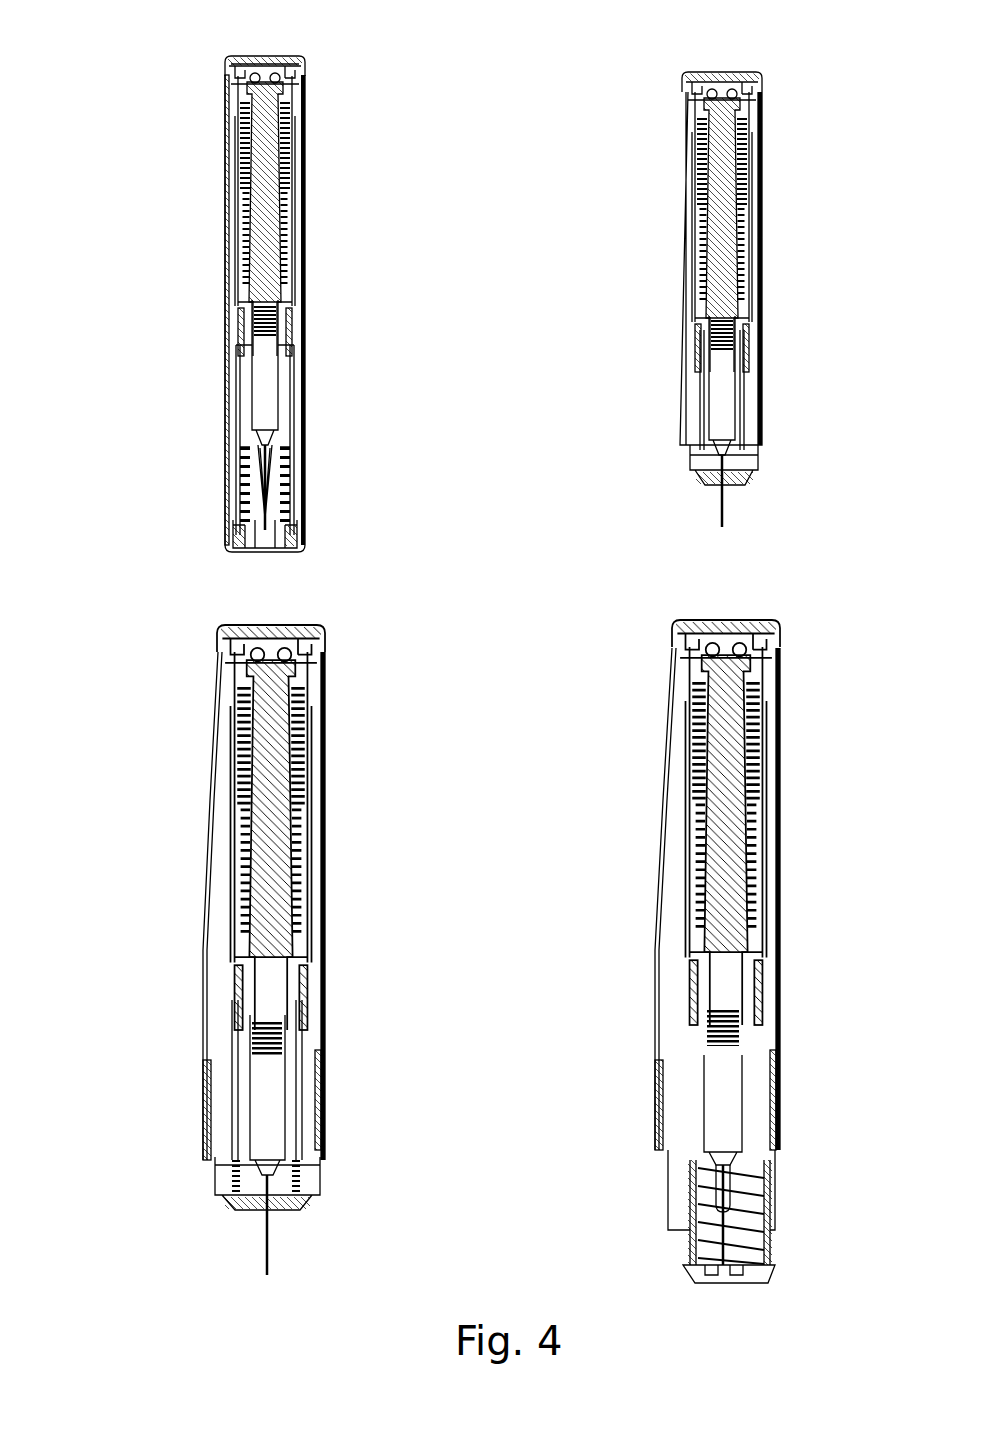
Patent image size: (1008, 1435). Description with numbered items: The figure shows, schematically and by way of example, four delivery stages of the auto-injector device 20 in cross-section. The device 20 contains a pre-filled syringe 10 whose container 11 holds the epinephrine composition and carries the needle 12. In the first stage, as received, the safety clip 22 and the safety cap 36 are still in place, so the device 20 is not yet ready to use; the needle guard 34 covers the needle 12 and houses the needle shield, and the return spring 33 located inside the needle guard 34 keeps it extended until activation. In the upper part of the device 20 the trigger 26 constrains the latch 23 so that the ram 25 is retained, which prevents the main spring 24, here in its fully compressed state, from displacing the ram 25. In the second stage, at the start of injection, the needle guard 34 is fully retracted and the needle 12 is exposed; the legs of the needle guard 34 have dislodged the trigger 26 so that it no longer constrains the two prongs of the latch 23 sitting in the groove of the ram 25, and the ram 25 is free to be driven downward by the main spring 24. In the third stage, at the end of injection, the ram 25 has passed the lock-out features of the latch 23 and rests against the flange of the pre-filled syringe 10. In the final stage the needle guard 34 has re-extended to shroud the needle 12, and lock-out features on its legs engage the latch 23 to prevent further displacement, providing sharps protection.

The auto-injector device 20 is at (152, 336).
The safety clip 22 is at (302, 62).
The latch 23 is at (302, 152).
The main spring 24 is at (238, 120).
The ram 25 is at (248, 210).
The trigger 26 is at (235, 60).
The pre-filled syringe 10 is at (268, 398).
The container 11 is at (268, 425).
The needle 12 is at (283, 473).
The return spring 33 is at (232, 455).
The needle guard 34 is at (237, 412).
The safety cap 36 is at (306, 517).